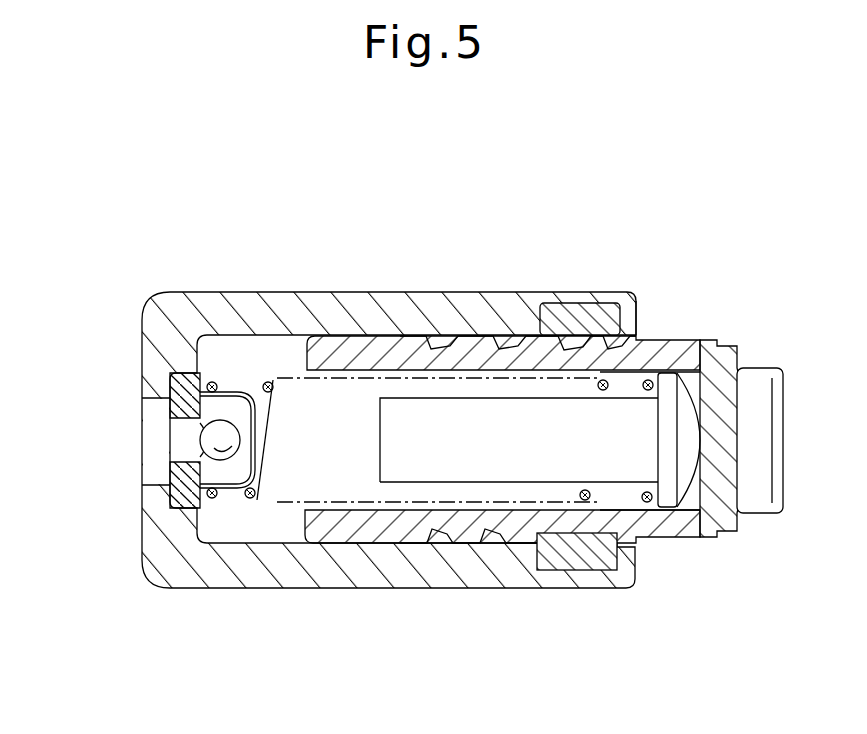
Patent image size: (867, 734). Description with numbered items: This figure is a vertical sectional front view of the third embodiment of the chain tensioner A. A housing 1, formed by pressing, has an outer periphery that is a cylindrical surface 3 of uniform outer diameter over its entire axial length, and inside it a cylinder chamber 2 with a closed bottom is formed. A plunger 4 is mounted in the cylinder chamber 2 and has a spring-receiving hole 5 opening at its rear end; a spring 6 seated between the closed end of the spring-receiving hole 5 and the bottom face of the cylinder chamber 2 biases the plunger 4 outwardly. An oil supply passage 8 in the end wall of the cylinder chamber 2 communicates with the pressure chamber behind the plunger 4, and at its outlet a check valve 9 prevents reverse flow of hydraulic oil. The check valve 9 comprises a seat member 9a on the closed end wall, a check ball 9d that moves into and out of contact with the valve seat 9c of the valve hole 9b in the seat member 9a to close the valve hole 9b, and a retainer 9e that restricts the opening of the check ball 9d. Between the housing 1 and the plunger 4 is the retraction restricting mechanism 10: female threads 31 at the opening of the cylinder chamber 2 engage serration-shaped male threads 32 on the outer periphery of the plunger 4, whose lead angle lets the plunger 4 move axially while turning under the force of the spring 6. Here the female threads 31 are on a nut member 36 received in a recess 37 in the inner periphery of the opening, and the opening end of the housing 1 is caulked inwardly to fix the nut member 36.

The housing 1 is at (450, 222).
The chain tensioner A is at (526, 241).
The cylinder chamber 2 is at (535, 345).
The cylindrical surface 3 is at (615, 300).
The female threads 31 is at (578, 348).
The plunger 4 is at (410, 530).
The spring-receiving hole 5 is at (487, 510).
The spring 6 is at (603, 500).
The oil supply passage 8 is at (152, 412).
The check valve 9 is at (196, 438).
The seat member 9a is at (183, 497).
The valve hole 9b is at (182, 452).
The valve seat 9c is at (230, 470).
The check ball 9d is at (238, 430).
The retainer 9e is at (253, 442).
The retraction restricting mechanism 10 is at (633, 297).
The male threads 32 is at (658, 342).
The nut member 36 is at (575, 555).
The recess 37 is at (598, 562).